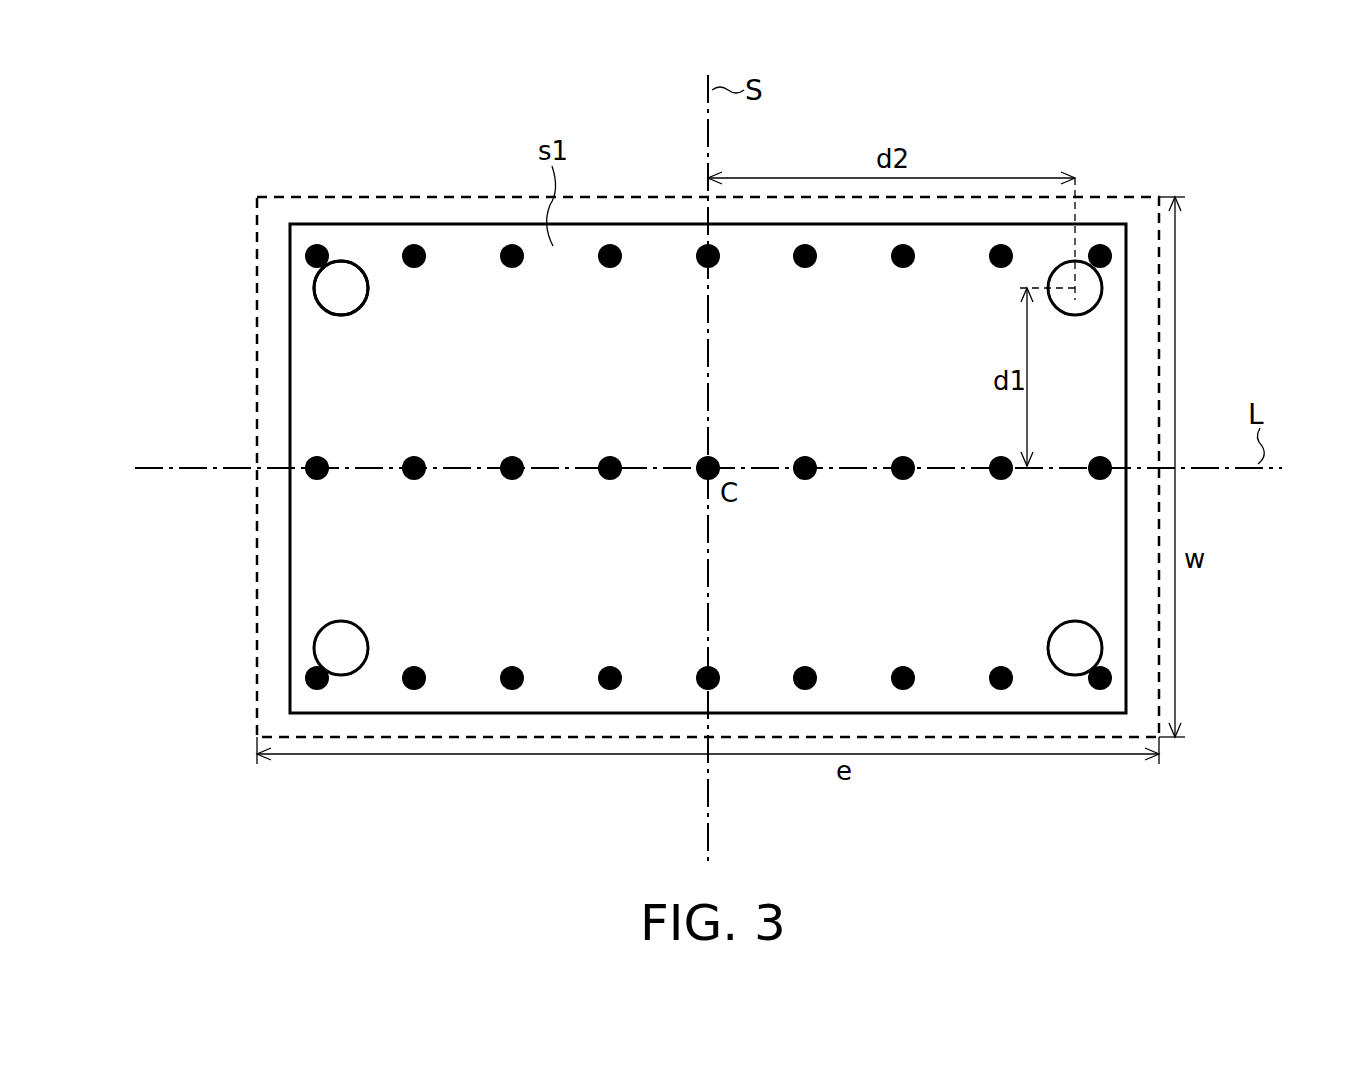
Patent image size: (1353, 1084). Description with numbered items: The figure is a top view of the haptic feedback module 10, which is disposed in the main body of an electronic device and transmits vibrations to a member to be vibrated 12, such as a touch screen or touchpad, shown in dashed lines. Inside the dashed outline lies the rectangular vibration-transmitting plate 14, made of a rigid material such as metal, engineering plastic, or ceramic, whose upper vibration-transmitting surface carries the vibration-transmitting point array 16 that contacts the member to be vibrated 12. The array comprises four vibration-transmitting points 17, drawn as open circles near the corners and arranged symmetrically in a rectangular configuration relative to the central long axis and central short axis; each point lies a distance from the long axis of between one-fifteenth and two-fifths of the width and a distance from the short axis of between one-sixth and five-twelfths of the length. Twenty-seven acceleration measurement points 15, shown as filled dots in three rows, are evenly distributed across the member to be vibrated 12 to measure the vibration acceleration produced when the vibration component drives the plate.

The haptic feedback module 10 is at (218, 118).
The member to be vibrated 12 is at (254, 377).
The vibration-transmitting plate 14 is at (287, 437).
The acceleration measurement points 15 is at (1098, 246).
The vibration-transmitting point array 16 is at (310, 280).
The vibration-transmitting points 17 is at (340, 302).